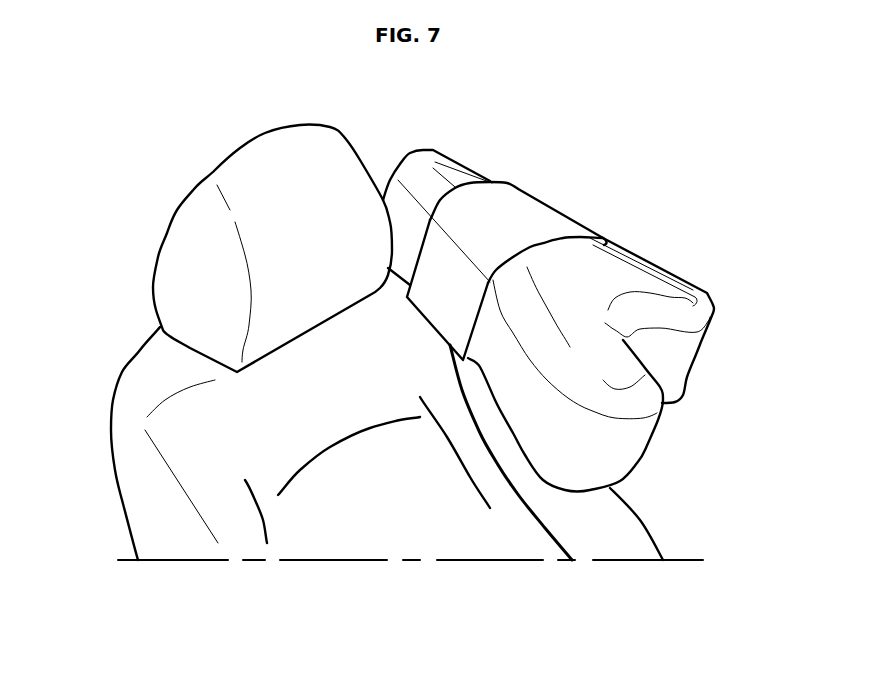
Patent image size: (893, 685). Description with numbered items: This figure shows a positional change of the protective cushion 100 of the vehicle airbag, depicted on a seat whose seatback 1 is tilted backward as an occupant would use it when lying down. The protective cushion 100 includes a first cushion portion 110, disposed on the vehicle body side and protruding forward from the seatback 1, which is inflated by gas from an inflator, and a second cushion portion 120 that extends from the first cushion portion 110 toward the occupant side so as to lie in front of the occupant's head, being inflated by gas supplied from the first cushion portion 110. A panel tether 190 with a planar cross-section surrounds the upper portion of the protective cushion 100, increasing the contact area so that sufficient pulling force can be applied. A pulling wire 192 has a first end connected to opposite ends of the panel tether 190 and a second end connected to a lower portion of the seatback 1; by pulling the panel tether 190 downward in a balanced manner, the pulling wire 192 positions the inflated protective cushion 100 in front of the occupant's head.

The seatback 1 is at (145, 480).
The protective cushion 100 is at (595, 291).
The first cushion portion 110 is at (657, 285).
The second cushion portion 120 is at (618, 448).
The panel tether 190 is at (470, 203).
The pulling wire 192 is at (518, 493).